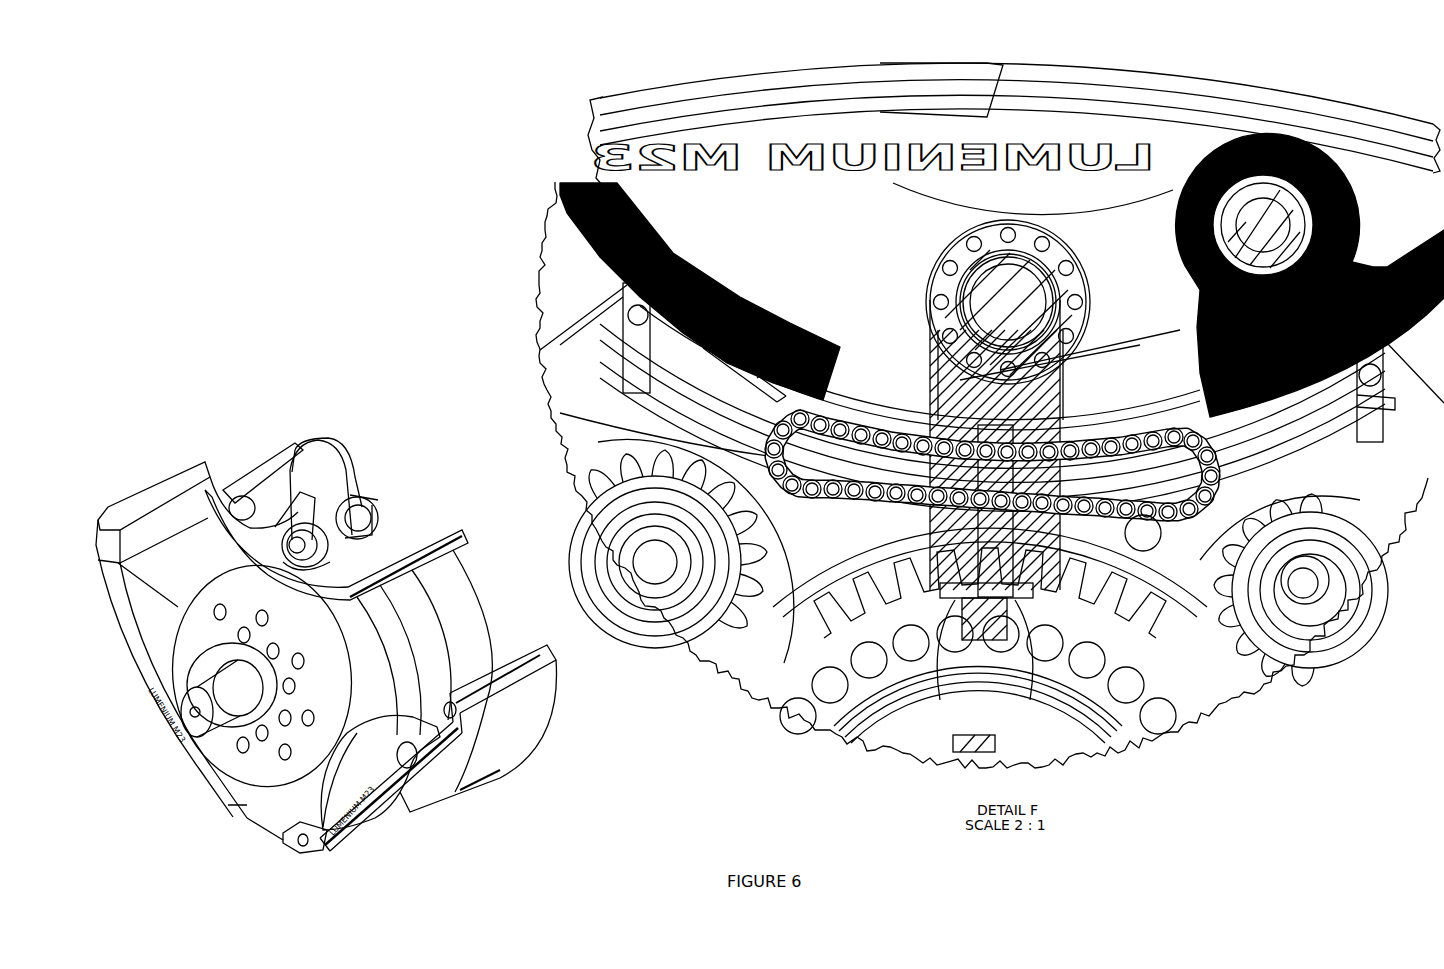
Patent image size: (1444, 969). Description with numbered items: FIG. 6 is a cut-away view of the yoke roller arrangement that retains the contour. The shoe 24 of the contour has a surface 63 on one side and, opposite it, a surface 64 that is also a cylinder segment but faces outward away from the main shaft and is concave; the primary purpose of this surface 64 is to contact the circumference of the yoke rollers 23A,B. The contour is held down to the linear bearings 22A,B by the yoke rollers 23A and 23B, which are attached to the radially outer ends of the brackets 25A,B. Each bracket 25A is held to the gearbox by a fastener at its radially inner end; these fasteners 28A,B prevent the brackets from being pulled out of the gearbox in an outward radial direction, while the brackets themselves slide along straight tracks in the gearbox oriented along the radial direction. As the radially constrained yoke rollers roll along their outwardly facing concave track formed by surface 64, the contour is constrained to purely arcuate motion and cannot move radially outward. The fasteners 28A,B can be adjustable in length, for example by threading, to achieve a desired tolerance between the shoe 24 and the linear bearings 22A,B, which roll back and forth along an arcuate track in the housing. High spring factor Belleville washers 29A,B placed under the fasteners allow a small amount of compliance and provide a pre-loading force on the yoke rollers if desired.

The linear bearings 22A,B is at (625, 432).
The yoke rollers 23A,B is at (1058, 240).
The yoke roller 23A is at (297, 493).
The yoke roller 23B is at (363, 507).
The shoe 24 is at (560, 197).
The brackets 25A,B is at (935, 352).
The bracket 25A is at (317, 487).
The fasteners 28A,B is at (945, 655).
The Belleville washers 29A,B is at (940, 600).
The surface 63 is at (585, 242).
The surface 64 is at (742, 297).